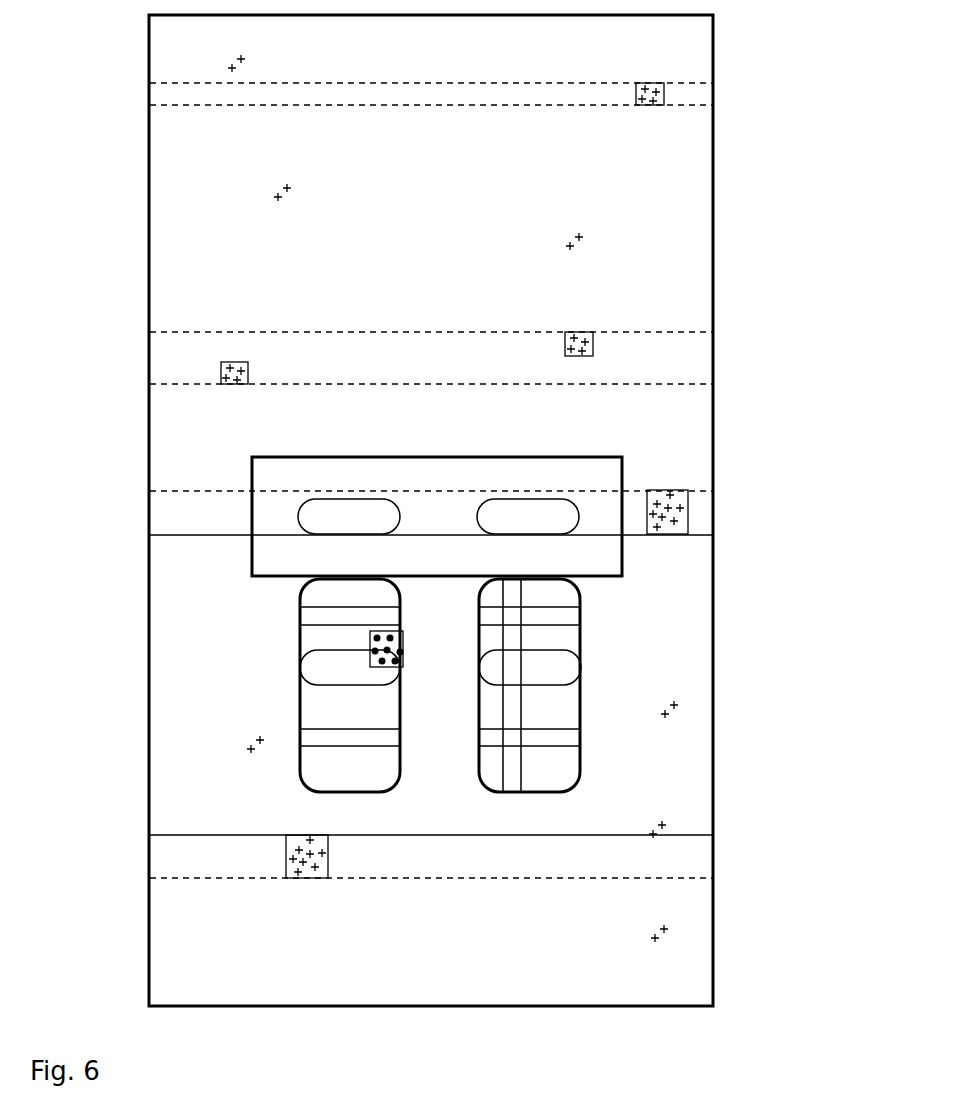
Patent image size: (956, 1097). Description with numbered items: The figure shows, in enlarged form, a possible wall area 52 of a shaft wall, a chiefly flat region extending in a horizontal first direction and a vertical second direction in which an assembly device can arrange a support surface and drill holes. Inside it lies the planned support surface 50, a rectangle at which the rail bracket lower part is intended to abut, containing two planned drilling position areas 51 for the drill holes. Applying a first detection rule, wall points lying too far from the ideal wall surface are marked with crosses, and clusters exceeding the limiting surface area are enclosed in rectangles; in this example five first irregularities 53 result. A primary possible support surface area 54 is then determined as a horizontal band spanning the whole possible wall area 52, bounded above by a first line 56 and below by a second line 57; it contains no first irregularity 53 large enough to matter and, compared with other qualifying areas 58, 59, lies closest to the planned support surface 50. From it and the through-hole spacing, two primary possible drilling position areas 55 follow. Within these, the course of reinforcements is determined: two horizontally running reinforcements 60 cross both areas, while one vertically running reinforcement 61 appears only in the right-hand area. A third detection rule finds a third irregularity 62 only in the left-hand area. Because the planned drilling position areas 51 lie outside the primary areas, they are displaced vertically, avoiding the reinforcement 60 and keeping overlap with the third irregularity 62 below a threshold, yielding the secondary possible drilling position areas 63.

The planned support surface 50 is at (610, 465).
The planned drilling position areas 51 is at (333, 517).
The possible wall area 52 is at (688, 50).
The first irregularities 53 is at (648, 105).
The primary possible support surface area 54 is at (200, 650).
The primary possible drilling position areas 55 is at (316, 710).
The first line 56 is at (175, 533).
The second line 57 is at (182, 833).
The other area 58 is at (238, 218).
The other area 59 is at (237, 977).
The horizontally running reinforcements 60 is at (330, 610).
The vertically running reinforcement 61 is at (520, 640).
The third irregularity 62 is at (370, 650).
The secondary possible drilling position areas 63 is at (318, 665).